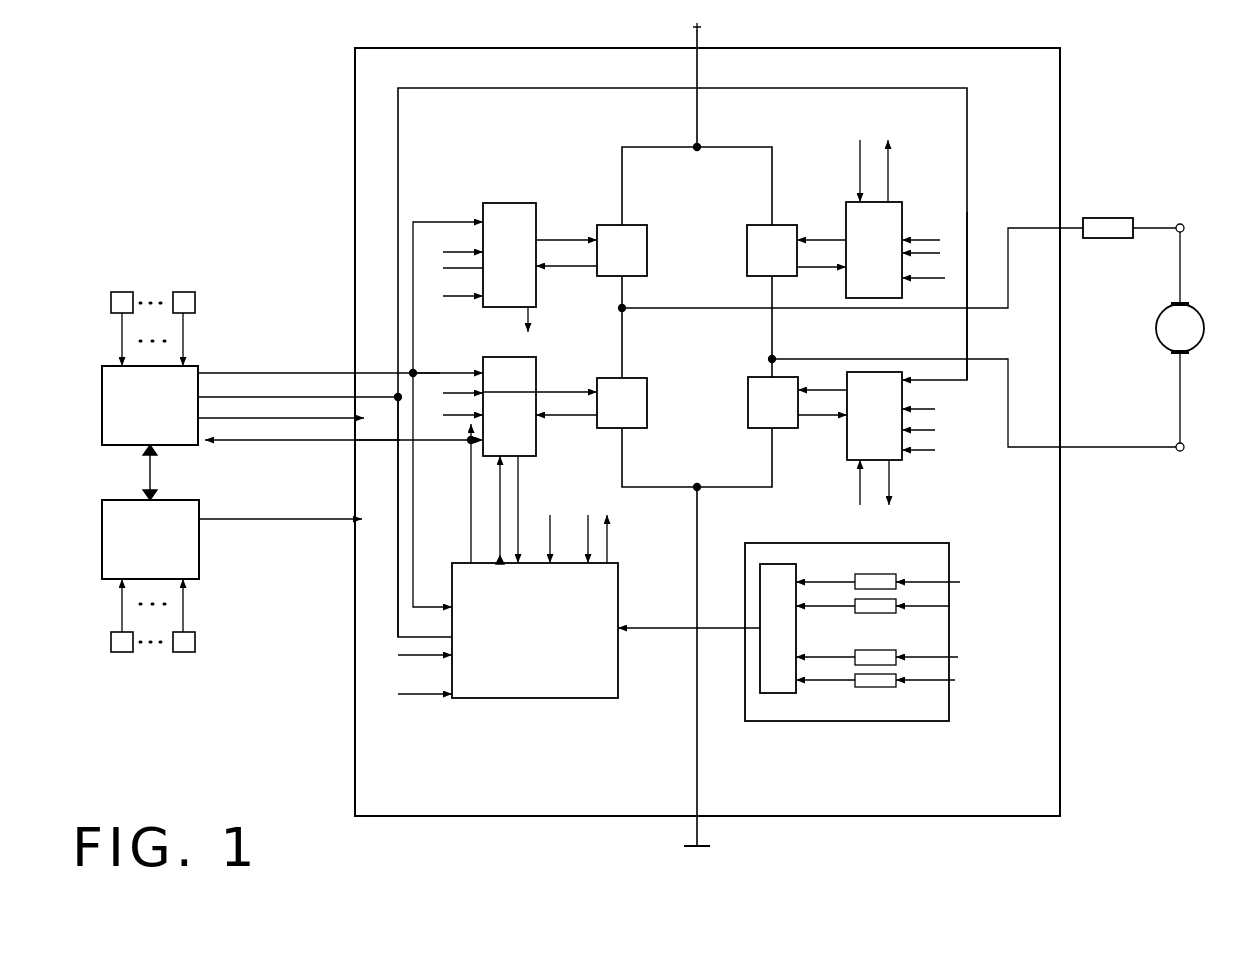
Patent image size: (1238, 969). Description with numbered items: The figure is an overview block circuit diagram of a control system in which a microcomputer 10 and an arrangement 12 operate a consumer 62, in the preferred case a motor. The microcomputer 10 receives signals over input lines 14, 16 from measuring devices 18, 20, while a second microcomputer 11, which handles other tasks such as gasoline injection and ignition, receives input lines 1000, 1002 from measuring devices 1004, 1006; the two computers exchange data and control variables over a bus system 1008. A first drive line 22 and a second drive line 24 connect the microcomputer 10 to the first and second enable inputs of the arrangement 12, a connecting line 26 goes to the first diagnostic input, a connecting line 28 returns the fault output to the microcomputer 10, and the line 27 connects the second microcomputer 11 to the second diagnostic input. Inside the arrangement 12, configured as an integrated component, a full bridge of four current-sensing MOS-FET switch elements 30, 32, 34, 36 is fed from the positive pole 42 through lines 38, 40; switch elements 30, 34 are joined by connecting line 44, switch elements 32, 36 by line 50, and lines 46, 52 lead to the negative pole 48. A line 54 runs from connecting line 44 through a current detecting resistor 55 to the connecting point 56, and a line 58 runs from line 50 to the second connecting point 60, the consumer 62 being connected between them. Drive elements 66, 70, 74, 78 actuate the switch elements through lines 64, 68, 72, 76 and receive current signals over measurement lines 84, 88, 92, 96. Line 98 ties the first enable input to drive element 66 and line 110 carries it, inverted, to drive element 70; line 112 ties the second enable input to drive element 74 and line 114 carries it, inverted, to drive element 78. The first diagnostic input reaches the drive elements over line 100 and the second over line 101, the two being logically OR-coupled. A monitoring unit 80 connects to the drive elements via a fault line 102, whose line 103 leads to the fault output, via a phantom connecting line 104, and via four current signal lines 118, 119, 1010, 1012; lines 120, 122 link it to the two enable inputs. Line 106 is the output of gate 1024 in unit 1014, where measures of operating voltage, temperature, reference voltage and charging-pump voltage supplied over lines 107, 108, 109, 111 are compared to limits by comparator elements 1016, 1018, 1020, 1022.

The microcomputer 10 is at (195, 376).
The second microcomputer 11 is at (195, 505).
The arrangement 12 is at (352, 78).
The input line 14 is at (122, 335).
The input line 16 is at (186, 339).
The measuring device 18 is at (127, 292).
The measuring device 20 is at (190, 292).
The first drive line 22 is at (265, 372).
The second drive line 24 is at (296, 396).
The connecting line 26 is at (243, 420).
The line 27 is at (272, 522).
The connecting line 28 is at (285, 443).
The switch element 30 is at (647, 235).
The switch element 32 is at (749, 232).
The switch element 34 is at (646, 382).
The switch element 36 is at (753, 380).
The line 38 is at (648, 150).
The line 40 is at (736, 150).
The positive pole 42 is at (702, 45).
The connecting line 44 is at (626, 289).
The line 46 is at (626, 462).
The negative pole 48 is at (698, 847).
The line 50 is at (772, 324).
The line 52 is at (772, 462).
The line 54 is at (712, 307).
The current detecting resistor 55 is at (1108, 219).
The connecting point 56 is at (1182, 222).
The line 58 is at (824, 359).
The second connecting point 60 is at (1181, 452).
The consumer 62 is at (1200, 356).
The line 64 is at (566, 238).
The drive element 66 is at (511, 205).
The line 68 is at (559, 389).
The drive element 70 is at (528, 358).
The line 72 is at (821, 237).
The drive element 74 is at (851, 213).
The line 76 is at (816, 370).
The drive element 78 is at (883, 380).
The monitoring unit 80 is at (532, 699).
The measurement line 84 is at (567, 268).
The measurement line 88 is at (816, 270).
The measurement line 92 is at (567, 418).
The measurement line 96 is at (820, 419).
The line 98 is at (413, 349).
The line 100 is at (445, 256).
The line 101 is at (476, 270).
The line 102 is at (476, 298).
The line 103 is at (373, 443).
The connecting line 104 is at (496, 324).
The line 106 is at (655, 631).
The line 107 is at (955, 583).
The line 108 is at (953, 681).
The line 109 is at (950, 607).
The line 110 is at (444, 370).
The line 111 is at (958, 658).
The line 112 is at (520, 90).
The line 114 is at (969, 312).
The line 118 is at (532, 322).
The line 119 is at (522, 489).
The line 120 is at (413, 537).
The line 122 is at (398, 580).
The input line 1000 is at (120, 610).
The input line 1002 is at (186, 611).
The measuring device 1004 is at (114, 651).
The measuring device 1006 is at (191, 651).
The bus system 1008 is at (146, 473).
The line 1010 is at (891, 176).
The line 1012 is at (892, 480).
The unit 1014 is at (843, 722).
The comparator element 1016 is at (893, 580).
The comparator element 1018 is at (893, 606).
The comparator element 1020 is at (887, 660).
The comparator element 1022 is at (893, 685).
The gate 1024 is at (797, 568).